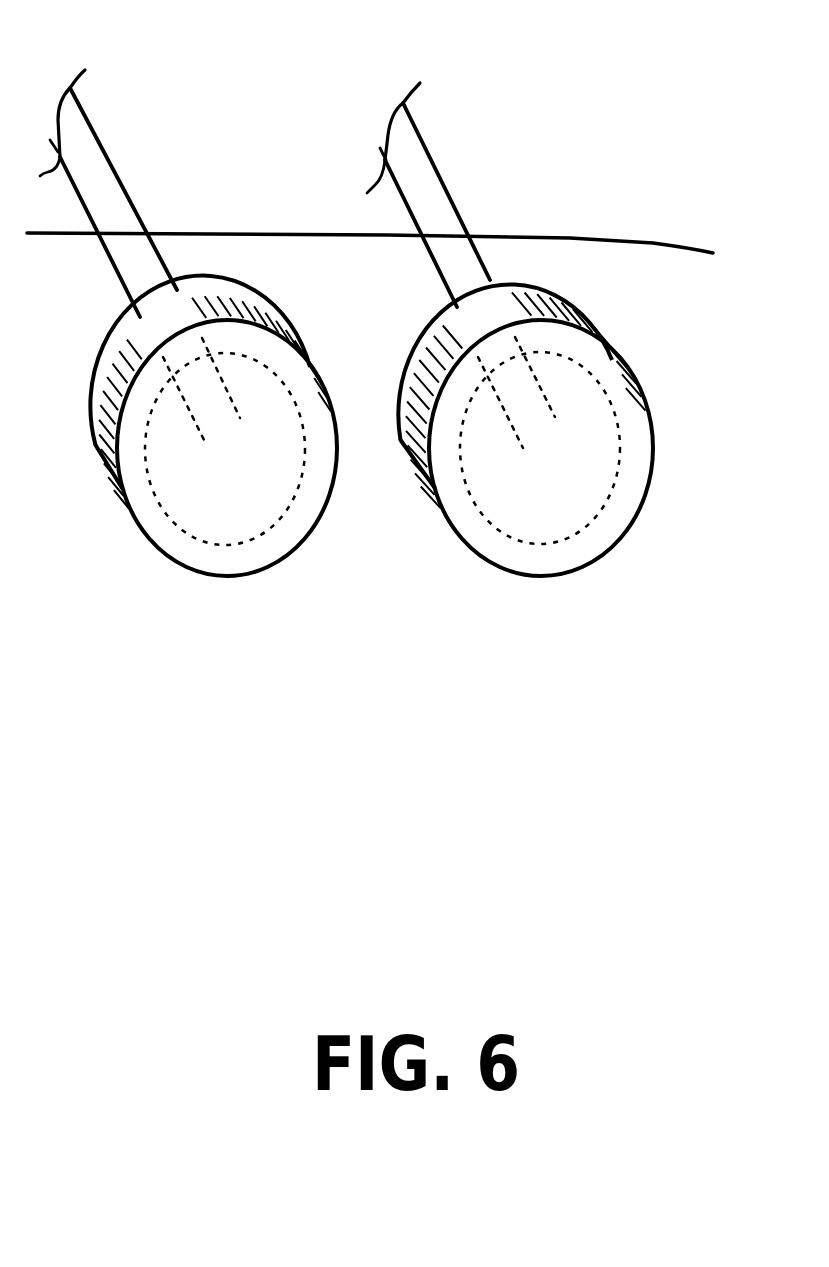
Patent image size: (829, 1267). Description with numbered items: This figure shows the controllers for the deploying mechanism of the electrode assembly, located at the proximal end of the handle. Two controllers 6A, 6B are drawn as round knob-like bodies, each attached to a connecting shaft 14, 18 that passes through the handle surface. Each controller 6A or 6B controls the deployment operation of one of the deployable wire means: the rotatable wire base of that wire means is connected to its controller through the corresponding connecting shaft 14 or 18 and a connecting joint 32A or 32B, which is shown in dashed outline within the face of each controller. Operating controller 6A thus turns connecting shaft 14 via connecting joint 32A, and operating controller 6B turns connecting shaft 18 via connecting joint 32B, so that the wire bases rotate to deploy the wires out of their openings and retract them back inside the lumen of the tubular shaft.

The connecting shaft 14 is at (123, 177).
The connecting shaft 18 is at (463, 203).
The controller 6A is at (182, 570).
The controller 6B is at (537, 580).
The connecting joint 32A is at (247, 545).
The connecting joint 32B is at (607, 500).